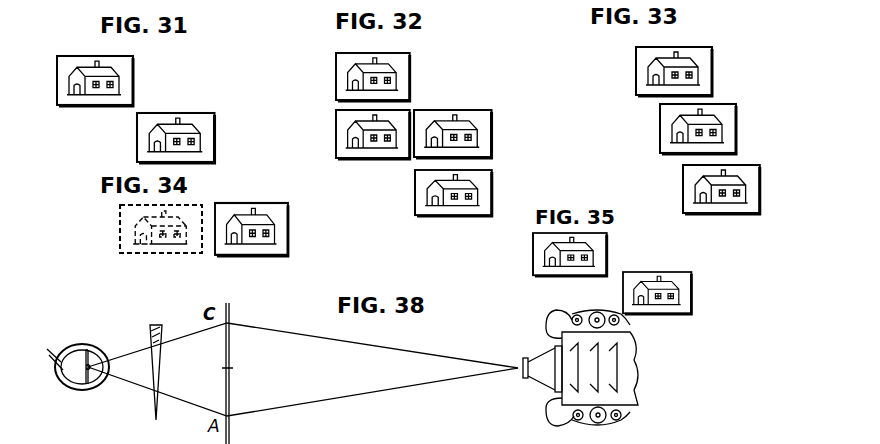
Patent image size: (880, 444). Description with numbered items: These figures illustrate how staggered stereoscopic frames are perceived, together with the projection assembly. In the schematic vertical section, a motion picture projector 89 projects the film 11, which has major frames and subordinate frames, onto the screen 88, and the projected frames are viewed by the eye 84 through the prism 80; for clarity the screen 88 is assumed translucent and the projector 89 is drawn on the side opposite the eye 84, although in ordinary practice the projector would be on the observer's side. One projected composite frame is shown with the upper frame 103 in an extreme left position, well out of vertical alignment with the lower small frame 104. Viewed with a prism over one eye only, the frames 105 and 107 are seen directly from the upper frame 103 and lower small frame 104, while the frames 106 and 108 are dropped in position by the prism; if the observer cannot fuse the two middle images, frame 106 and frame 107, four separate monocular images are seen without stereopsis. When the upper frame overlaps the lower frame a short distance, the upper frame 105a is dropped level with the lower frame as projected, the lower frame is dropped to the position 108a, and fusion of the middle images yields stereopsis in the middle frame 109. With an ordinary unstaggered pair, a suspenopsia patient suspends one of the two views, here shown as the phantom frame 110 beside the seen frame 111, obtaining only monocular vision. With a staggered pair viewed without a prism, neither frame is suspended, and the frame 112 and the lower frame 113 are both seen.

In FIG. 31, the upper frame 103 is at (57, 60).
In FIG. 31, the lower small frame 104 is at (136, 148).
In FIG. 32, the frame 105 is at (338, 82).
In FIG. 32, the frame 106 is at (340, 137).
In FIG. 32, the frame 107 is at (468, 116).
In FIG. 33, the upper frame 105a is at (640, 87).
In FIG. 33, the middle frame 109 is at (666, 133).
In FIG. 33, the frame position 108a is at (690, 195).
In FIG. 34, the phantom image frame 110 is at (120, 222).
In FIG. 34, the image frame 111 is at (279, 214).
In FIG. 35, the frame 108 is at (481, 181).
In FIG. 35, the image frame 112 is at (535, 242).
In FIG. 35, the lower frame 113 is at (690, 283).
In FIG. 38, the eye 84 is at (96, 346).
In FIG. 38, the prism 80 is at (156, 327).
In FIG. 38, the screen 88 is at (230, 350).
In FIG. 38, the motion picture projector 89 is at (536, 358).
In FIG. 38, the film 11 is at (556, 324).